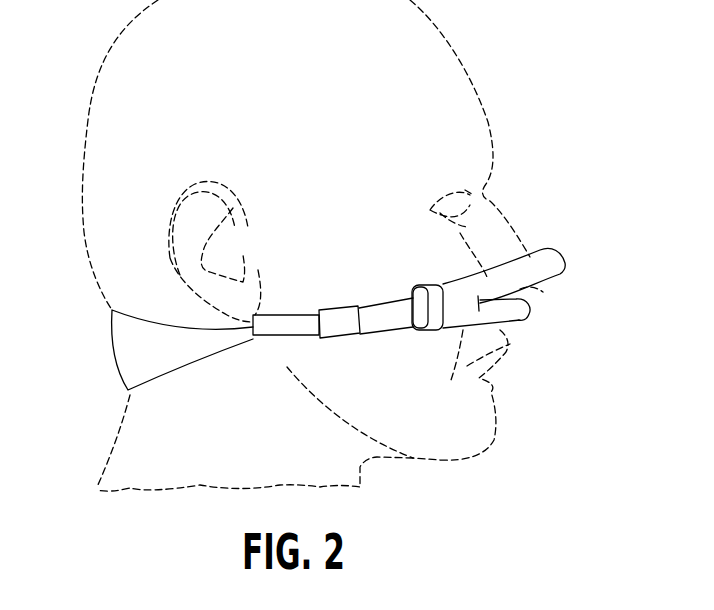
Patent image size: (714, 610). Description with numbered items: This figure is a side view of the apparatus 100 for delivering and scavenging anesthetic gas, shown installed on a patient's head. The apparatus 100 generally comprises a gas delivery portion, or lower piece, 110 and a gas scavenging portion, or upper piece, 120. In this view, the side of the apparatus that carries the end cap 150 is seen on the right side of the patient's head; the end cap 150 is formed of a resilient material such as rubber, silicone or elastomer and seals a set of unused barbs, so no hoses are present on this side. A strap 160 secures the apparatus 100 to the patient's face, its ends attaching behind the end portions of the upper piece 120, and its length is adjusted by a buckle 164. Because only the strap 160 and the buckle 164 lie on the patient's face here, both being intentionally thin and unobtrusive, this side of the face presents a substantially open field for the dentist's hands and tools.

The apparatus 100 is at (335, 277).
The gas delivery portion 110 is at (525, 316).
The gas scavenging portion 120 is at (563, 271).
The end cap 150 is at (424, 258).
The strap 160 is at (68, 357).
The buckle 164 is at (337, 338).